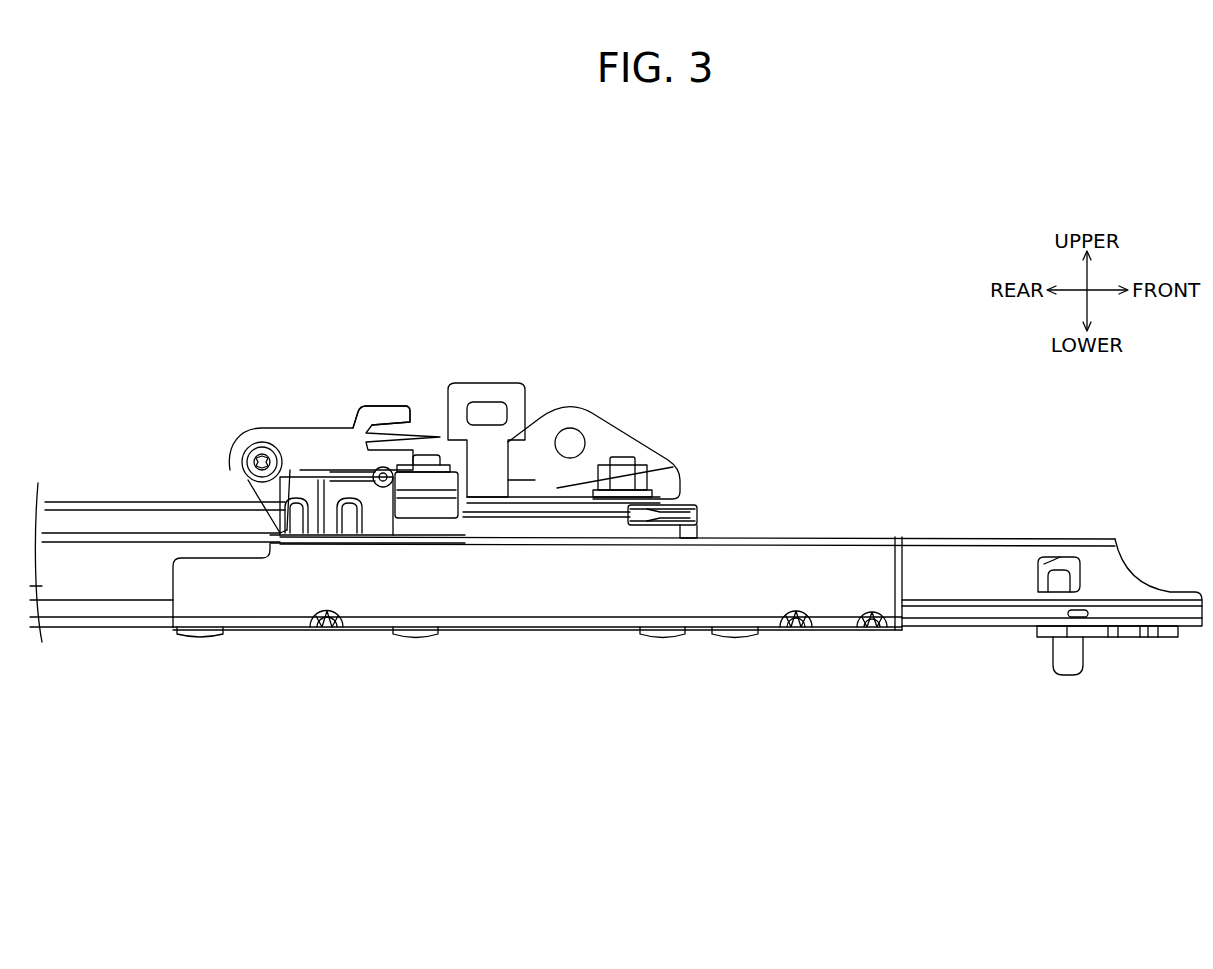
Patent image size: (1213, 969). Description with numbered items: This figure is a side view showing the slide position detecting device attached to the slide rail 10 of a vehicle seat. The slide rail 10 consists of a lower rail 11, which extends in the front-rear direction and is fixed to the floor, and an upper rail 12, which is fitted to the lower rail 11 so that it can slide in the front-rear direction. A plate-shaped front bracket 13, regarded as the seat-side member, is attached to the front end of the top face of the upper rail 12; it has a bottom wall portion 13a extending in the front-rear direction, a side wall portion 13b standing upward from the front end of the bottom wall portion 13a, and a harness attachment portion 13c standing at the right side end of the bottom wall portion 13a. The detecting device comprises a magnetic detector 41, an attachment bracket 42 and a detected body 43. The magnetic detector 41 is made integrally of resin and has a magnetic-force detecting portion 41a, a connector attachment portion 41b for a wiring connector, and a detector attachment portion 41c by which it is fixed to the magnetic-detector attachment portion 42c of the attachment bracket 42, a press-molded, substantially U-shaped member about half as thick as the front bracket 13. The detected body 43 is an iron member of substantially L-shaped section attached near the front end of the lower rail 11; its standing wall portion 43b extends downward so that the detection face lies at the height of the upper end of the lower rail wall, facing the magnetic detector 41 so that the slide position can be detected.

The slide rail 10 is at (616, 628).
The lower rail 11 is at (127, 577).
The upper rail 12 is at (80, 523).
The front bracket 13 is at (572, 427).
The bottom wall portion 13a is at (558, 487).
The side wall portion 13b is at (558, 407).
The harness attachment portion 13c is at (485, 382).
The magnetic detector 41 is at (262, 524).
The magnetic-force detecting portion 41a is at (335, 540).
The connector attachment portion 41b is at (430, 518).
The detector attachment portion 41c is at (240, 483).
The attachment bracket 42 is at (251, 425).
The magnetic-detector attachment portion 42c is at (283, 428).
The detected body 43 is at (570, 634).
The standing wall portion 43b is at (830, 592).